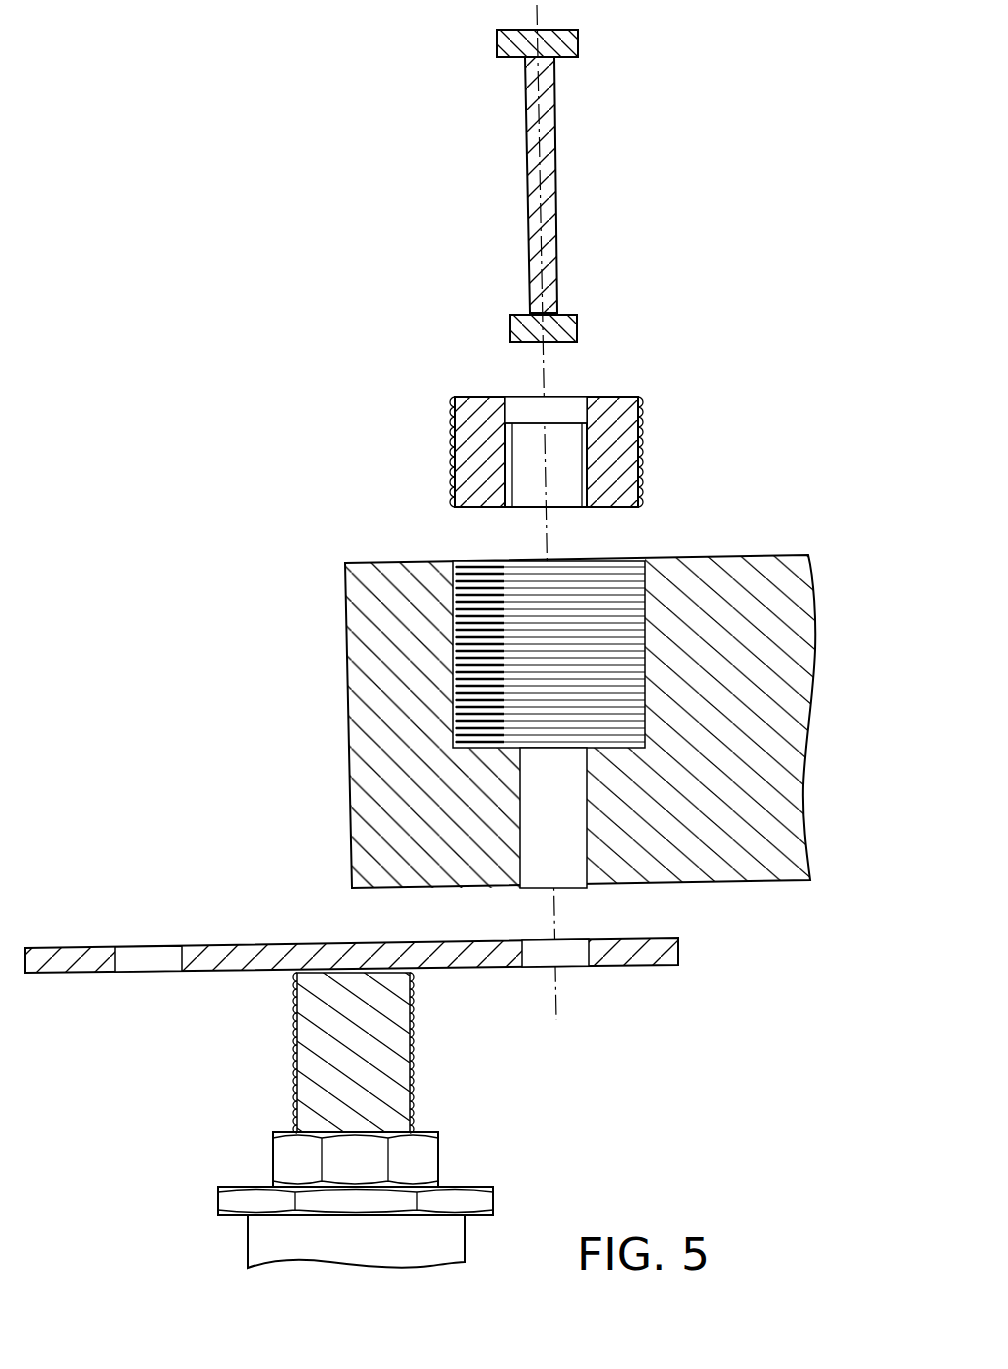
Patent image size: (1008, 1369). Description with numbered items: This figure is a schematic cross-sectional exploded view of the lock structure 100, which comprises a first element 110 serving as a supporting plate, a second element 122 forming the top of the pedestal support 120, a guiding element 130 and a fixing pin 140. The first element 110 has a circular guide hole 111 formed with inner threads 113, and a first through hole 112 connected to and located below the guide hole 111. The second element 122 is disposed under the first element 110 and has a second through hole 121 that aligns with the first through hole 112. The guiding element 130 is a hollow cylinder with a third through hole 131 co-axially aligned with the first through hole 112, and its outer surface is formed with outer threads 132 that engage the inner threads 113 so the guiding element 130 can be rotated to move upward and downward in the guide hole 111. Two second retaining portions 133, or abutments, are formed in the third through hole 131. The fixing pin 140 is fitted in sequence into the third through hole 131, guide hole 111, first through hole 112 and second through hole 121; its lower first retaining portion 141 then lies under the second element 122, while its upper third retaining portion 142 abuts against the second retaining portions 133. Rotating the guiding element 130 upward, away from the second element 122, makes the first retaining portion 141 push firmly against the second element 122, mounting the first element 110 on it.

The lock structure 100 is at (200, 131).
The first element 110 is at (537, 700).
The guide hole 111 is at (457, 657).
The first through hole 112 is at (525, 820).
The inner threads 113 is at (595, 580).
The pedestal support 120 is at (478, 1241).
The second through hole 121 is at (152, 958).
The second element 122 is at (354, 960).
The guiding element 130 is at (562, 434).
The third through hole 131 is at (530, 456).
The outer threads 132 is at (641, 408).
The second retaining portions 133 is at (532, 422).
The fixing pin 140 is at (566, 188).
The first retaining portion 141 is at (572, 330).
The third retaining portion 142 is at (572, 44).